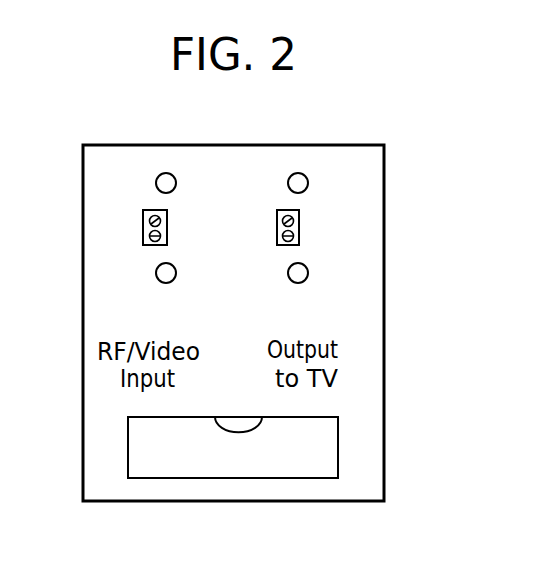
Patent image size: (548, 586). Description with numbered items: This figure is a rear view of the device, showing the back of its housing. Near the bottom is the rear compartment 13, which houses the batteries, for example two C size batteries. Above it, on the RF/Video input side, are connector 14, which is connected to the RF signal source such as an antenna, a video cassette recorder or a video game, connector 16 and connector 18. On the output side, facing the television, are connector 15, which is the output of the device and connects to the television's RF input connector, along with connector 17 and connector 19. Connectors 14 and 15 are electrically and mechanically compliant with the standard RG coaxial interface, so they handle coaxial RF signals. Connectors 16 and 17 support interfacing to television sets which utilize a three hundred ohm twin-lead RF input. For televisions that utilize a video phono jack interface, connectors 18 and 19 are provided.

The rear compartment 13 is at (263, 467).
The connector 14 is at (155, 184).
The connector 15 is at (309, 183).
The connector 16 is at (143, 228).
The connector 17 is at (299, 228).
The connector 18 is at (155, 274).
The connector 19 is at (309, 273).